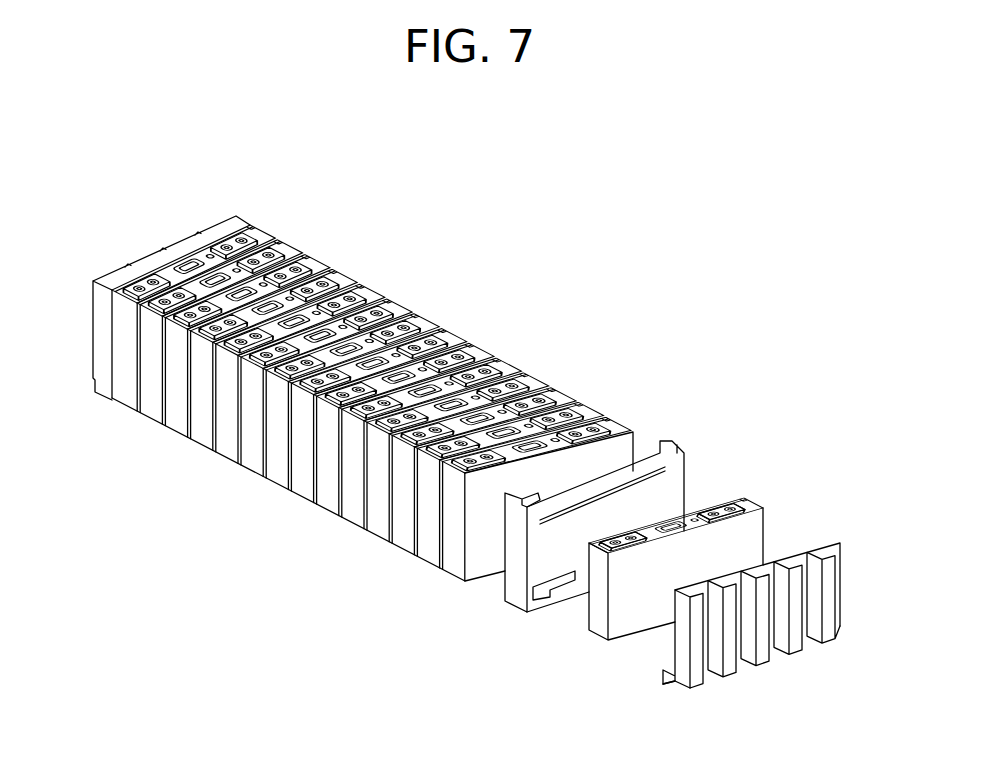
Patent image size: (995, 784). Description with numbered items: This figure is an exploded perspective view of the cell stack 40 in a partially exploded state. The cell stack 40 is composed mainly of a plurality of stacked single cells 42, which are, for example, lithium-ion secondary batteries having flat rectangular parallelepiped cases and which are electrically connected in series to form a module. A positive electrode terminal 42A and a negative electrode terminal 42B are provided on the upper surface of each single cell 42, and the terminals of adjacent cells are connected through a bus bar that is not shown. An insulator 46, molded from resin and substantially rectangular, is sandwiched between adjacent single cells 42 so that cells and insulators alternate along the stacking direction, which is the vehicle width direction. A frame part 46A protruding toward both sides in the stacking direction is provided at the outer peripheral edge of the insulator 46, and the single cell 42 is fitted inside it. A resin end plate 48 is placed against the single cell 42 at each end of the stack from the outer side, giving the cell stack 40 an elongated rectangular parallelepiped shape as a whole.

The cell stack 40 is at (566, 238).
The single cell 42 is at (187, 257).
The positive electrode terminal 42A is at (627, 527).
The negative electrode terminal 42B is at (728, 500).
The insulator 46 is at (118, 400).
The frame part 46A is at (677, 443).
The end plate 48 is at (97, 322).